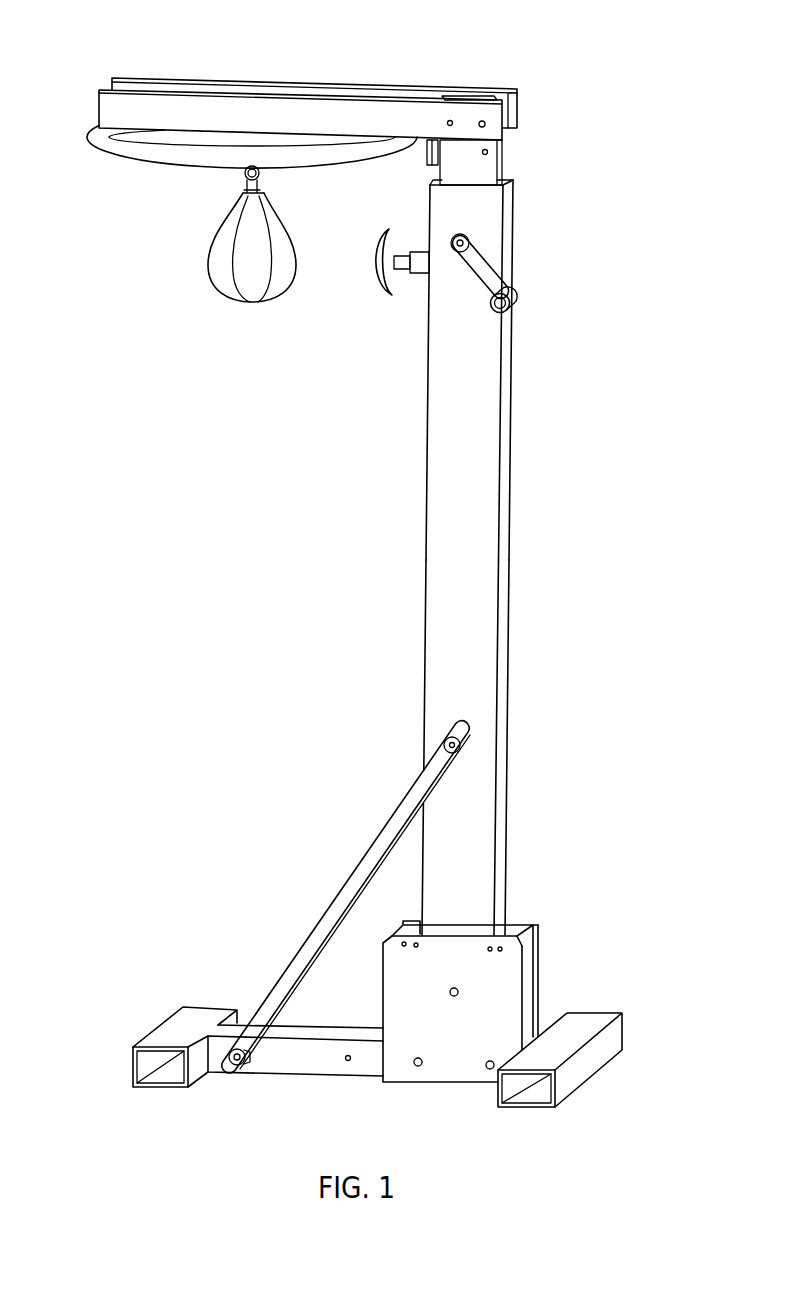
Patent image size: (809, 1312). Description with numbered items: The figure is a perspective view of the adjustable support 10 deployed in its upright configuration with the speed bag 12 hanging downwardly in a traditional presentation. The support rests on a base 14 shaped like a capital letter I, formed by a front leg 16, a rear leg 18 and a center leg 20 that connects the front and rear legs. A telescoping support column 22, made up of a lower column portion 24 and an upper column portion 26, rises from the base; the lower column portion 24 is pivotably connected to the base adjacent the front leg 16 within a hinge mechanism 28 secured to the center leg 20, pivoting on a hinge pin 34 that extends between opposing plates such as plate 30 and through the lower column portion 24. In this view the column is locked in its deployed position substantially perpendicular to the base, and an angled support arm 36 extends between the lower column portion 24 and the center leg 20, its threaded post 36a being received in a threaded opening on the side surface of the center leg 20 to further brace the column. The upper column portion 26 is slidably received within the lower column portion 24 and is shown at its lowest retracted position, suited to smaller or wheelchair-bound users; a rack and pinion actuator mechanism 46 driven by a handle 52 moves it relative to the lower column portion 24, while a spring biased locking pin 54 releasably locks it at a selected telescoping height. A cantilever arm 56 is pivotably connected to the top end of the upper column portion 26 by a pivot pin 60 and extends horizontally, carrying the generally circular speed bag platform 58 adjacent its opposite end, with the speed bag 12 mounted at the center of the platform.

The adjustable support 10 is at (600, 409).
The speed bag 12 is at (206, 268).
The base 14 is at (186, 1105).
The front leg 16 is at (604, 1068).
The rear leg 18 is at (163, 1027).
The center leg 20 is at (316, 1077).
The telescoping support column 22 is at (360, 431).
The lower column portion 24 is at (508, 783).
The upper column portion 26 is at (518, 152).
The hinge mechanism 28 is at (550, 977).
The hinge plate 30 is at (430, 1082).
The hinge pin 34 is at (525, 938).
The angled support arm 36 is at (345, 893).
The threaded post 36a is at (234, 1070).
The rack and pinion actuator mechanism 46 is at (424, 326).
The handle 52 is at (515, 258).
The spring biased locking pin 54 is at (427, 252).
The cantilever arm 56 is at (230, 80).
The speed bag platform 58 is at (95, 147).
The pivot pin 60 is at (465, 88).